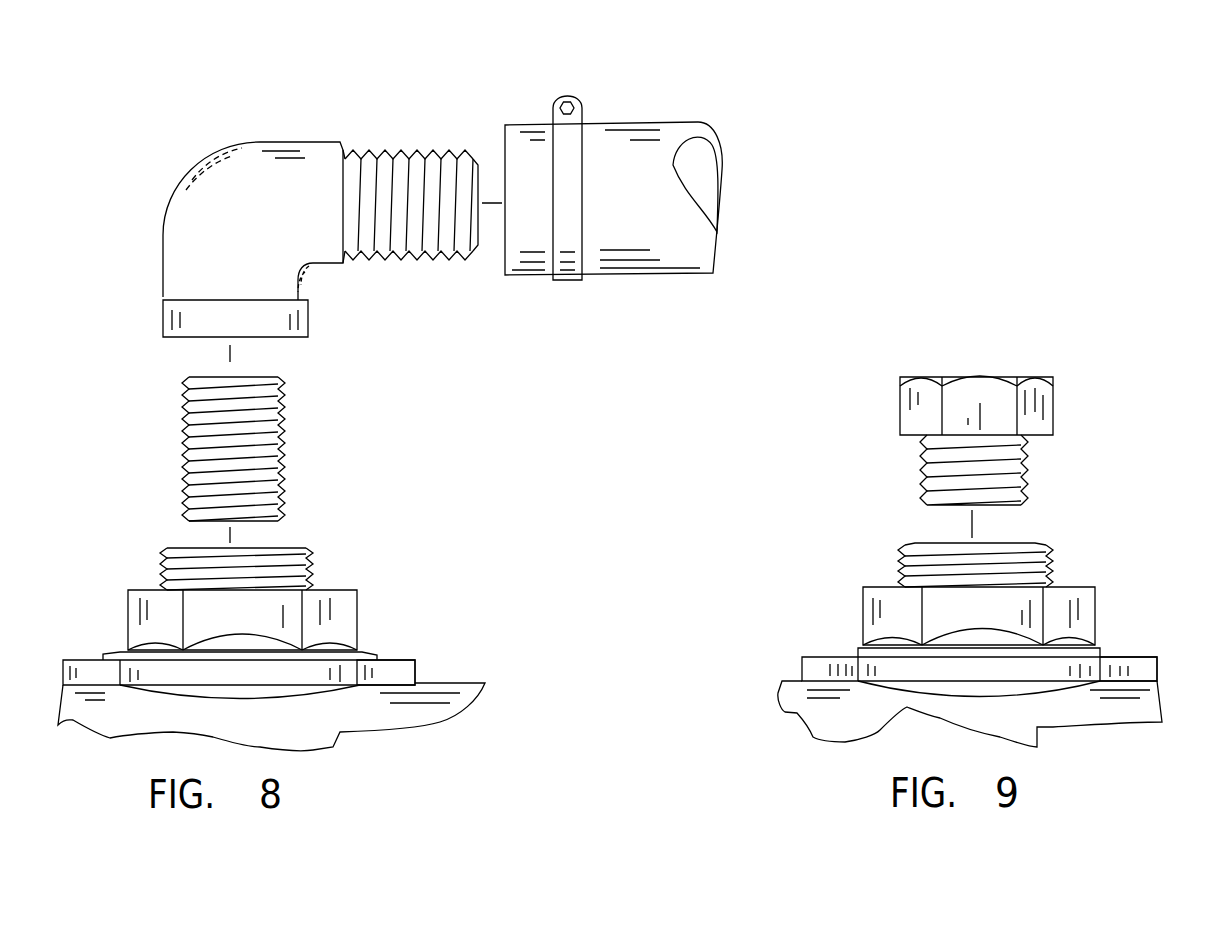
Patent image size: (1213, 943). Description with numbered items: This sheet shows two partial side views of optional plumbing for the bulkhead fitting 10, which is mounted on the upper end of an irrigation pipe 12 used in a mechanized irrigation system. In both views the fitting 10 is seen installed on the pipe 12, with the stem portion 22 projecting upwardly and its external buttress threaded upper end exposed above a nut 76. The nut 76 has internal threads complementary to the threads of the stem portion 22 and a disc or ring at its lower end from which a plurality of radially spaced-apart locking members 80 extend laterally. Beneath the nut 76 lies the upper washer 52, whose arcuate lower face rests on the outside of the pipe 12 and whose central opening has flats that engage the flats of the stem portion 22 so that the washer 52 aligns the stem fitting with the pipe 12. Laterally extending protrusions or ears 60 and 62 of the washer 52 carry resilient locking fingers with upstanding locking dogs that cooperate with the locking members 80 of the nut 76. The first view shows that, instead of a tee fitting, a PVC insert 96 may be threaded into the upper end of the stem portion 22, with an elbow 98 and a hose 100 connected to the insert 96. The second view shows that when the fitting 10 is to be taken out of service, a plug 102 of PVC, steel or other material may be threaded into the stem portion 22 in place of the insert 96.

In FIG. 8, the bulkhead fitting 10 is at (314, 592).
In FIG. 9, the bulkhead fitting 10 is at (967, 579).
In FIG. 8, the irrigation pipe 12 is at (420, 695).
In FIG. 9, the irrigation pipe 12 is at (817, 690).
In FIG. 8, the stem portion 22 is at (307, 553).
In FIG. 9, the stem portion 22 is at (1030, 543).
In FIG. 8, the upper washer 52 is at (272, 687).
In FIG. 9, the upper washer 52 is at (1034, 685).
In FIG. 8, the protrusion 60 is at (95, 667).
In FIG. 9, the protrusion 60 is at (822, 667).
In FIG. 8, the protrusion 62 is at (417, 662).
In FIG. 9, the protrusion 62 is at (1133, 660).
In FIG. 8, the nut 76 is at (365, 634).
In FIG. 9, the nut 76 is at (834, 607).
In FIG. 8, the locking members 80 is at (380, 657).
In FIG. 9, the locking members 80 is at (1105, 648).
In FIG. 8, the PVC insert 96 is at (287, 435).
In FIG. 8, the elbow 98 is at (285, 160).
In FIG. 8, the hose 100 is at (627, 132).
In FIG. 9, the plug 102 is at (1058, 407).